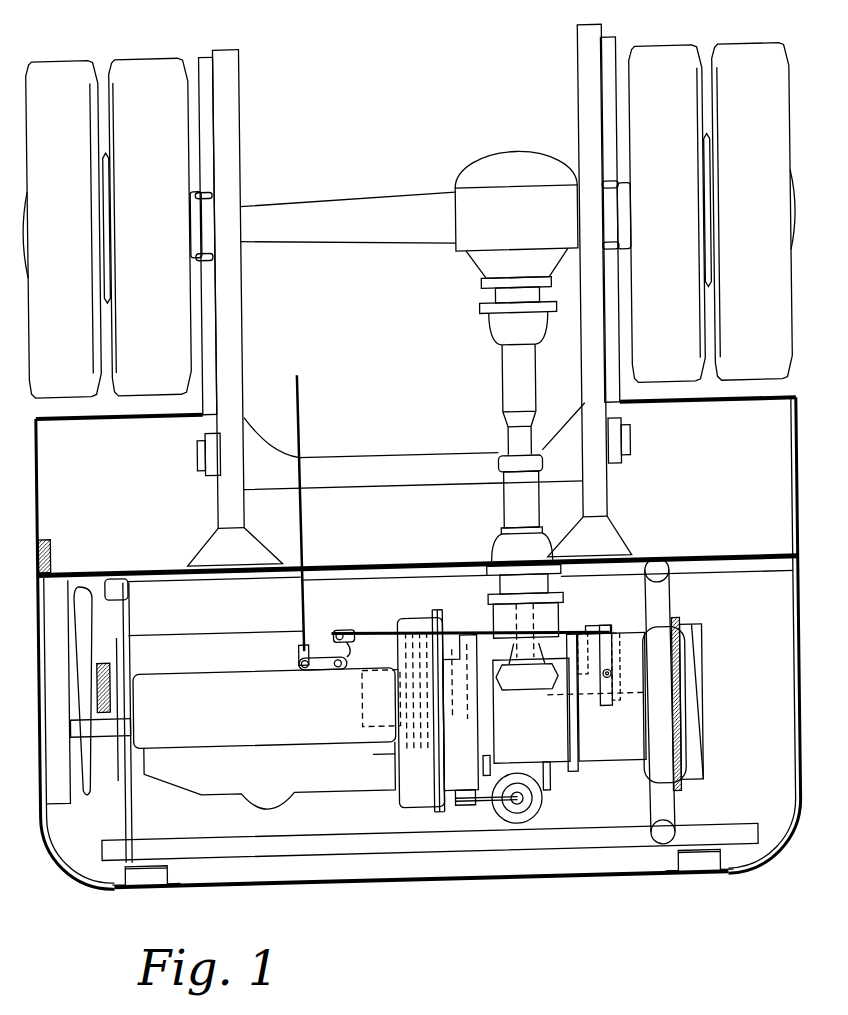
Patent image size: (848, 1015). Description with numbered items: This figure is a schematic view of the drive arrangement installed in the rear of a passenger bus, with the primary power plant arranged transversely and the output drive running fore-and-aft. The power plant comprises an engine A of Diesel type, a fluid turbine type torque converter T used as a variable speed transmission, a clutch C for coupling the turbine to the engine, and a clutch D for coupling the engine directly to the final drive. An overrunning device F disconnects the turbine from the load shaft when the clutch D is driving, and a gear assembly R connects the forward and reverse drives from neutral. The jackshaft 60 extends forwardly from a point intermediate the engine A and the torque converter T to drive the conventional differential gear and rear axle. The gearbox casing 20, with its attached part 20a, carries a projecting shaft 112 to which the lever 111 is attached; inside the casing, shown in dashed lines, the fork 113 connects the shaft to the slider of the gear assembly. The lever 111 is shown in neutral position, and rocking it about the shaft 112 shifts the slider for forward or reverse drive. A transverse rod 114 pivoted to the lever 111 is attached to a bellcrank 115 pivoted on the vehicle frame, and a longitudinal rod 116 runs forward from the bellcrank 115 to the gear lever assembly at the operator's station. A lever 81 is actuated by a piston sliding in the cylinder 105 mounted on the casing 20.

The engine A is at (208, 677).
The clutch C is at (404, 632).
The clutch D is at (436, 626).
The overrunning device F is at (597, 730).
The gear assembly R is at (580, 712).
The torque converter T is at (694, 639).
The casing 20 is at (617, 755).
The drum bracket 20a is at (687, 752).
The jackshaft 60 is at (539, 626).
The lever 81 is at (478, 806).
The cylinder 105 is at (536, 808).
The lever 111 is at (610, 632).
The shaft 112 is at (608, 677).
The fork 113 is at (606, 698).
The transverse rod 114 is at (467, 630).
The bellcrank 115 is at (333, 642).
The longitudinal rod 116 is at (302, 557).